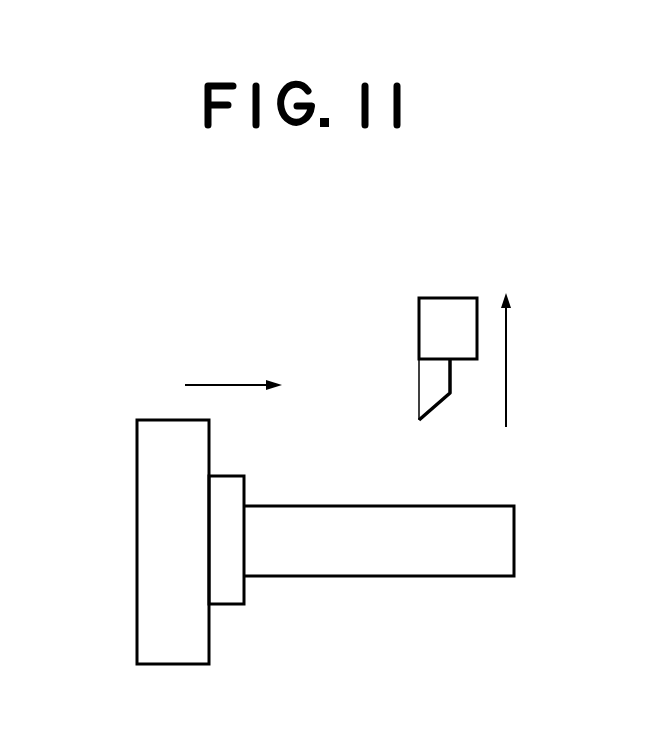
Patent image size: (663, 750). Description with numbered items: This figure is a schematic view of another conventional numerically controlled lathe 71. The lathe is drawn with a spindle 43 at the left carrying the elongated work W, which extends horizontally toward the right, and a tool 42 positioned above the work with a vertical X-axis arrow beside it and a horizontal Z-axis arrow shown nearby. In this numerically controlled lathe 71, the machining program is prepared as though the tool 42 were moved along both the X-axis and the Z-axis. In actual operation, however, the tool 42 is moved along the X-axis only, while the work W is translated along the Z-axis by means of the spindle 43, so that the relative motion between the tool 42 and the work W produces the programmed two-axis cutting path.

The numerically controlled lathe 71 is at (251, 270).
The spindle 43 is at (137, 508).
The tool 42 is at (425, 378).
The work W is at (368, 576).